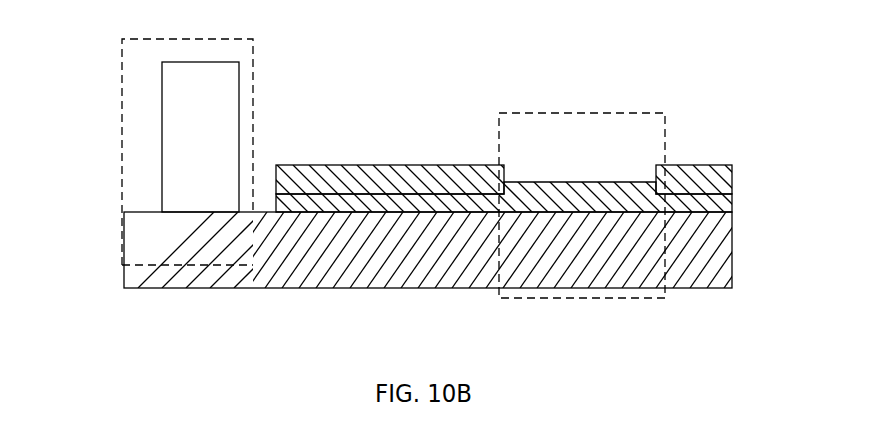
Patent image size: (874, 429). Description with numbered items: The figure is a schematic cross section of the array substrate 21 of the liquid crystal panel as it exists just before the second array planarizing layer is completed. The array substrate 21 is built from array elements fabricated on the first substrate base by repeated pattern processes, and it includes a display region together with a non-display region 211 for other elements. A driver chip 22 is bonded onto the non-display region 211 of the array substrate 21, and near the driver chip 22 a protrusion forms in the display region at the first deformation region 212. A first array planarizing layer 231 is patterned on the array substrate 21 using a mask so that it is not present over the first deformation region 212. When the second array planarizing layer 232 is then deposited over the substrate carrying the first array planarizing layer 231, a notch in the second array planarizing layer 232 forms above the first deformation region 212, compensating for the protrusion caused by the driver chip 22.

The array substrate 21 is at (732, 248).
The driver chip 22 is at (162, 68).
The non-display region 211 is at (138, 132).
The first deformation region 212 is at (642, 122).
The first array planarizing layer 231 is at (732, 188).
The second array planarizing layer 232 is at (725, 160).